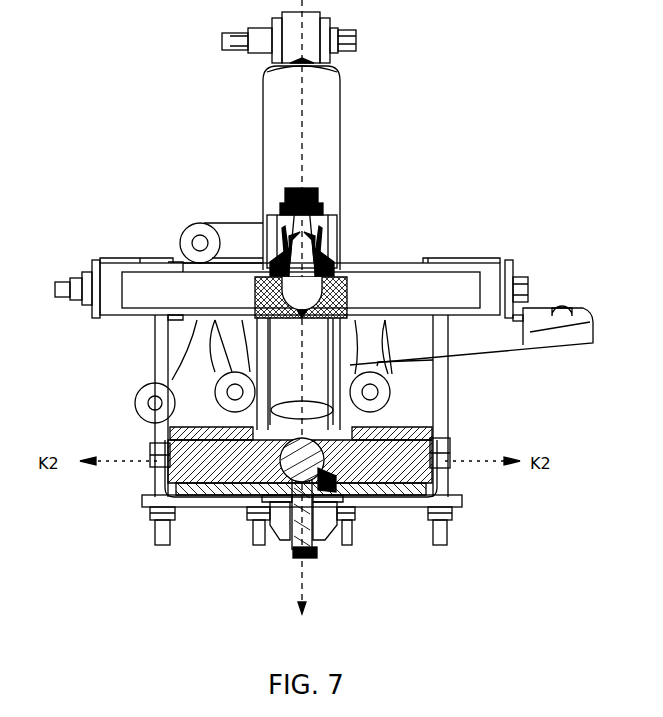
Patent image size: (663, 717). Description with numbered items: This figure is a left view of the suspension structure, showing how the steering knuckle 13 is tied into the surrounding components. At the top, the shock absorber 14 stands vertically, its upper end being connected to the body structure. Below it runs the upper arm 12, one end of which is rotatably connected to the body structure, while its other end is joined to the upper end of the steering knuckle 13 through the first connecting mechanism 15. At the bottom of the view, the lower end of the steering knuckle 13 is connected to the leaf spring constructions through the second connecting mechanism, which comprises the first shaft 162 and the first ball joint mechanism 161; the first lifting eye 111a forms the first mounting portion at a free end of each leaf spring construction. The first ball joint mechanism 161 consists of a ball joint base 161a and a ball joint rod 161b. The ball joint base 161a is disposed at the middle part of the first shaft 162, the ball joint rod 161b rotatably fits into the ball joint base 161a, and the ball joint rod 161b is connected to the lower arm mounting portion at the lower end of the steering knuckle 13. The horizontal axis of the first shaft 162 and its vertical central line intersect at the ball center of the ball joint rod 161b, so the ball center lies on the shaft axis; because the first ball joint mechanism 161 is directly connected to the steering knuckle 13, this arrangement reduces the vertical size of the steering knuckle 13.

The shock absorber 14 is at (332, 116).
The first connecting mechanism 15 is at (326, 200).
The upper arm 12 is at (384, 280).
The first shaft 162 is at (450, 452).
The steering knuckle 13 is at (321, 523).
The first ball joint mechanism 161 is at (261, 561).
The ball joint base 161a is at (242, 502).
The ball joint rod 161b is at (290, 537).
The first lifting eye 111a is at (388, 505).